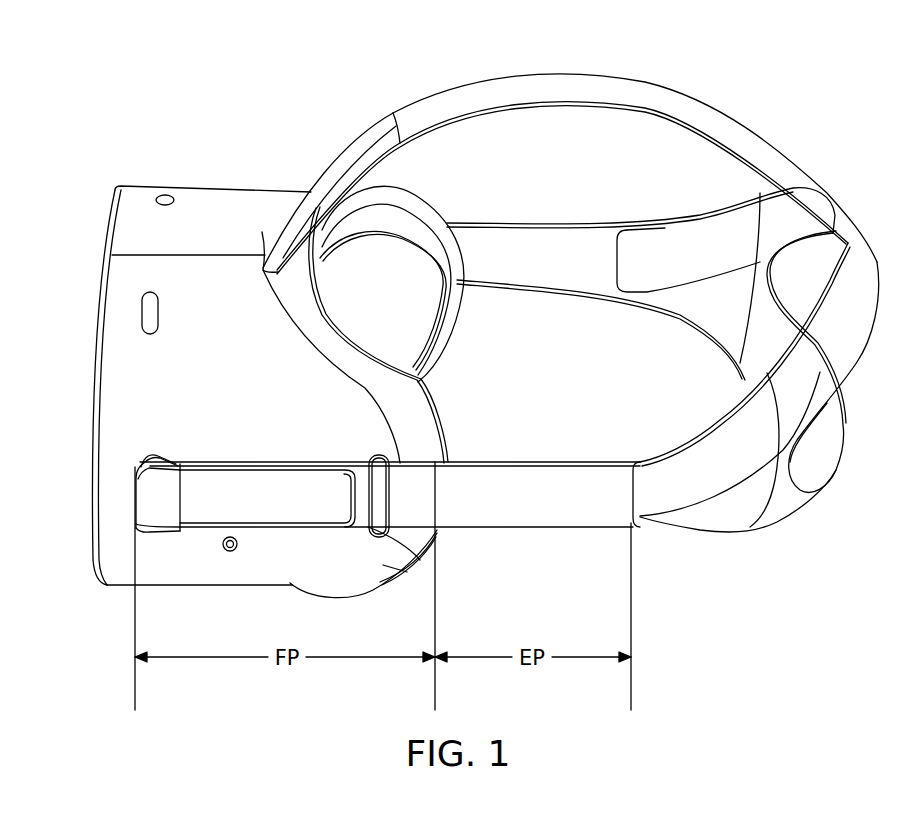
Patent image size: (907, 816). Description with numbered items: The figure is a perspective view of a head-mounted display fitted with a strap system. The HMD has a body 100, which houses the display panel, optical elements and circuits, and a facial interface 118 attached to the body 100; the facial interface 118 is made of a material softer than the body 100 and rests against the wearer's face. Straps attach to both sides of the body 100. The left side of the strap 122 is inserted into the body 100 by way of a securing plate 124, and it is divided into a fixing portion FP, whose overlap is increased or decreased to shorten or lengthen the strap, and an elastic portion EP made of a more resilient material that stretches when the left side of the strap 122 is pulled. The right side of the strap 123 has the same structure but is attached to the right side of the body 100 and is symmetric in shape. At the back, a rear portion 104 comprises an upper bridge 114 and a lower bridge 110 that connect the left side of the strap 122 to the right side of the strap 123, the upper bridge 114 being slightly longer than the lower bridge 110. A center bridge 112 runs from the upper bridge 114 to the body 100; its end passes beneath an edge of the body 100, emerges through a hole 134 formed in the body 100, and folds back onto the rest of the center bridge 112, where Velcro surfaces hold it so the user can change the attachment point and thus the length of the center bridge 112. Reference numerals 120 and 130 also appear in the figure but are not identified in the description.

The body 100 is at (100, 372).
The rear portion 104 is at (806, 525).
The lower bridge 110 is at (826, 458).
The center bridge 112 is at (556, 97).
The upper bridge 114 is at (850, 256).
The facial interface 118 is at (421, 424).
The inner front band 120 is at (193, 518).
The left side of the strap 122 is at (367, 518).
The right side of the strap 123 is at (546, 253).
The securing plate 124 is at (293, 462).
The front strap 130 is at (342, 162).
The hole 134 is at (262, 232).